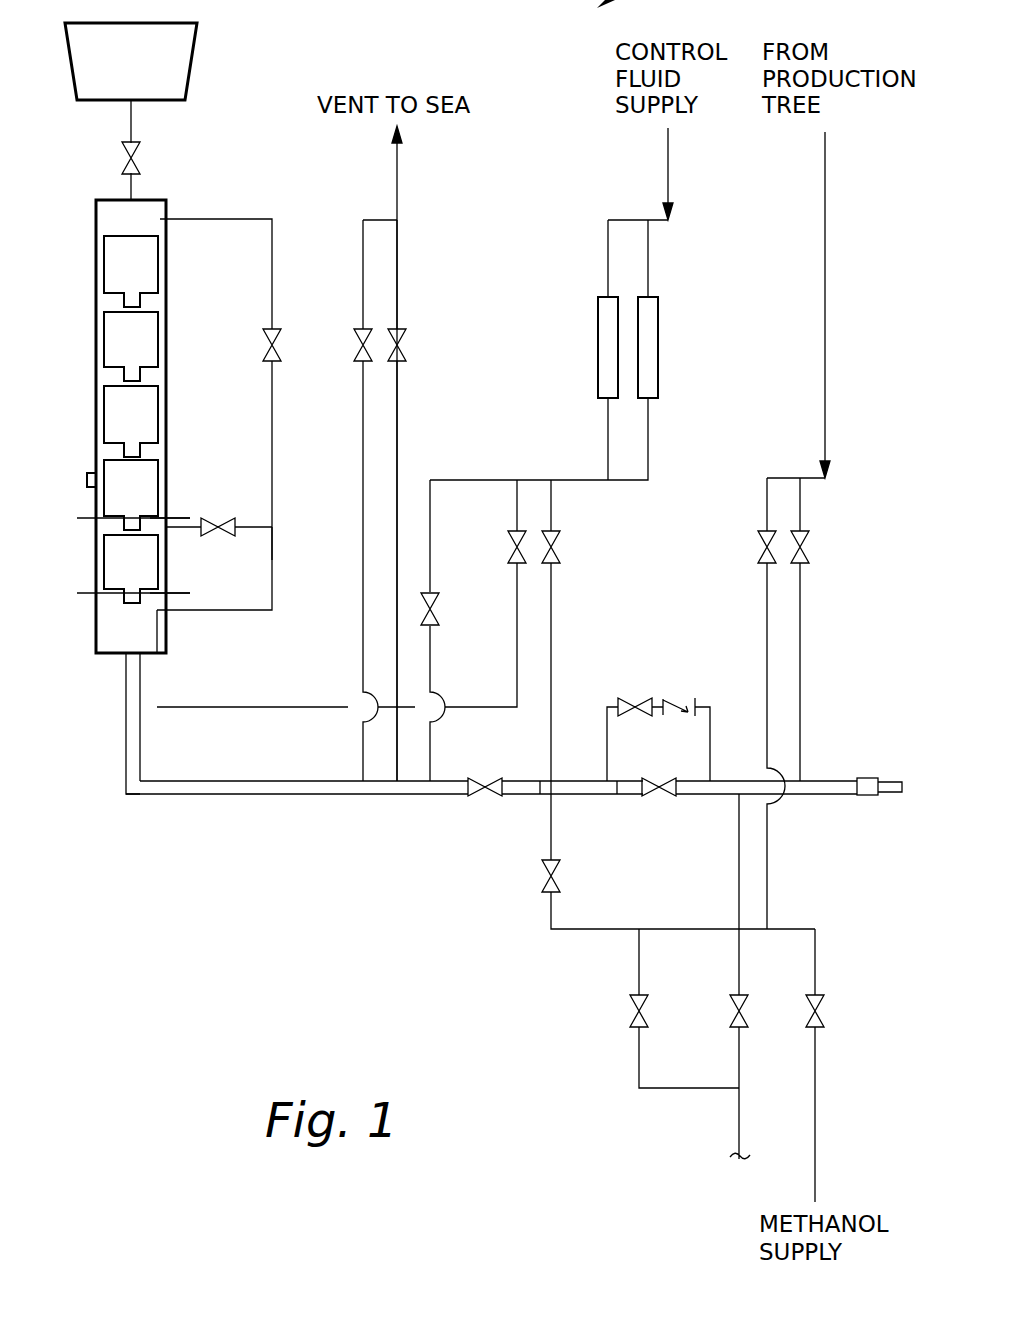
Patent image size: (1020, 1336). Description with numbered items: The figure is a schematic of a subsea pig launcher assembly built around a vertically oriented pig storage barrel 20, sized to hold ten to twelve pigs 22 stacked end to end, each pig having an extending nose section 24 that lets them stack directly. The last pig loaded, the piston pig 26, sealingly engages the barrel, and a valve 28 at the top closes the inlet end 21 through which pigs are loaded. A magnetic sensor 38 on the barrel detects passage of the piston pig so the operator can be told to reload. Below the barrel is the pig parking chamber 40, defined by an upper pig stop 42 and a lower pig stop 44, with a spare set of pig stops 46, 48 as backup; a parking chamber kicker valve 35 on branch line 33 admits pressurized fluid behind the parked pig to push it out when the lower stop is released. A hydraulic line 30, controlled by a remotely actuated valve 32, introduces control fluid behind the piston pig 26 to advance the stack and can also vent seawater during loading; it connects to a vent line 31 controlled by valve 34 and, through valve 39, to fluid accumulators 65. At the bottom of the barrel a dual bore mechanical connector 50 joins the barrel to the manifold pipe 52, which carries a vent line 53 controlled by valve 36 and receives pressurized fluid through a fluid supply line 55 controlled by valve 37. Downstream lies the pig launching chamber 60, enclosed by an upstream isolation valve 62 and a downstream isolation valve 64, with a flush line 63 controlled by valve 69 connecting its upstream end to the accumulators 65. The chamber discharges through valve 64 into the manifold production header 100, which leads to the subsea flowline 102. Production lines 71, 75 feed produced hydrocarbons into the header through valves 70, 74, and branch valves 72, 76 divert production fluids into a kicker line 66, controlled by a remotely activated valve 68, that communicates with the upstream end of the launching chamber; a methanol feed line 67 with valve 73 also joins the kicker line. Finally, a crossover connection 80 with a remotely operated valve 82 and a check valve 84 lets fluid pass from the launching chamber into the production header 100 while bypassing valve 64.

The pig storage barrel 20 is at (95, 296).
The inlet end 21 is at (96, 200).
The pigs 22 is at (110, 340).
The nose section 24 is at (125, 378).
The piston pig 26 is at (110, 256).
The valve 28 is at (141, 158).
The hydraulic line 30 is at (270, 410).
The vent line 31 is at (399, 283).
The remotely actuated valve 32 is at (264, 345).
The branch line 33 is at (256, 540).
The valve 34 is at (401, 350).
The parking chamber kicker valve 35 is at (228, 515).
The valve 36 is at (355, 347).
The valve 37 is at (434, 612).
The magnetic sensor 38 is at (87, 476).
The valve 39 is at (509, 550).
The pig parking chamber 40 is at (110, 527).
The upper pig stop 42 is at (77, 517).
The lower pig stop 44 is at (77, 592).
The spare pig stop 46 is at (172, 518).
The spare pig stop 48 is at (172, 593).
The dual bore mechanical connector 50 is at (110, 630).
The manifold pipe 52 is at (203, 796).
The vent line 53 is at (362, 410).
The fluid supply line 55 is at (432, 507).
The pig launching chamber 60 is at (585, 797).
The upstream isolation valve 62 is at (478, 797).
The flush line 63 is at (554, 618).
The downstream isolation valve 64 is at (651, 797).
The fluid accumulators 65 is at (597, 348).
The kicker line 66 is at (604, 931).
The methanol feed line 67 is at (817, 958).
The remotely activated valve 68 is at (544, 878).
The valve 69 is at (554, 550).
The valve 70 is at (804, 550).
The production line 71 is at (826, 345).
The branch valve 72 is at (760, 550).
The valve 73 is at (820, 1013).
The valve 74 is at (732, 1013).
The production line 75 is at (738, 1136).
The branch valve 76 is at (632, 1013).
The crossover connection 80 is at (708, 698).
The remotely operated valve 82 is at (623, 698).
The check valve 84 is at (672, 698).
The manifold production header 100 is at (822, 797).
The subsea flowline 102 is at (892, 797).